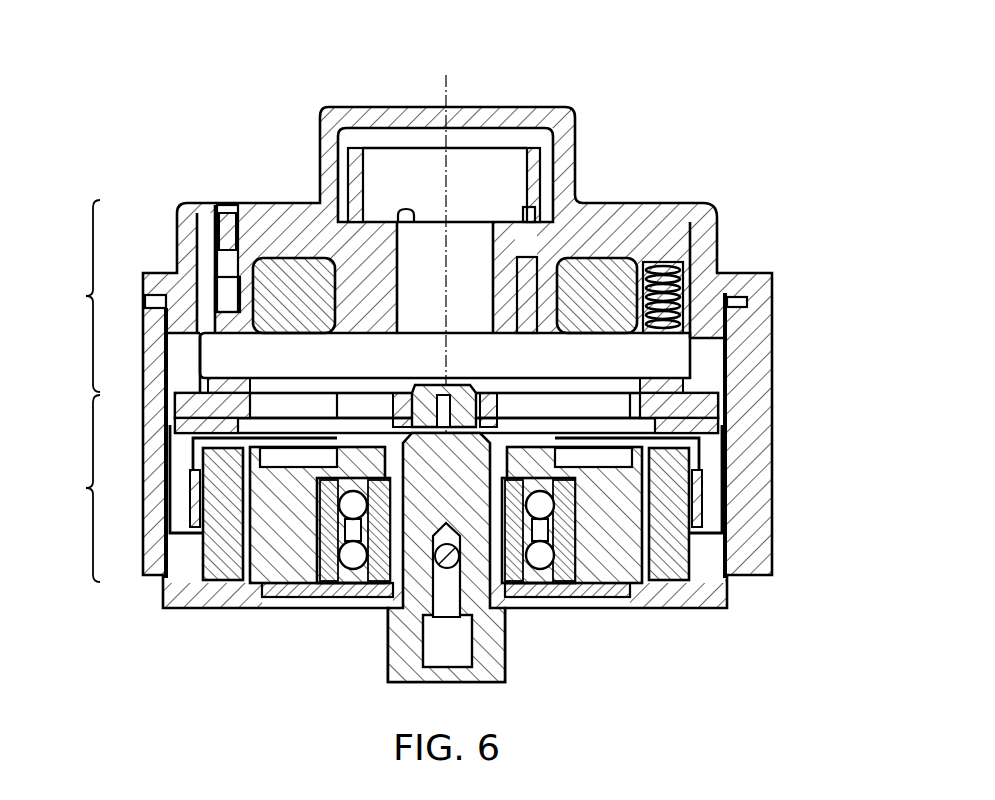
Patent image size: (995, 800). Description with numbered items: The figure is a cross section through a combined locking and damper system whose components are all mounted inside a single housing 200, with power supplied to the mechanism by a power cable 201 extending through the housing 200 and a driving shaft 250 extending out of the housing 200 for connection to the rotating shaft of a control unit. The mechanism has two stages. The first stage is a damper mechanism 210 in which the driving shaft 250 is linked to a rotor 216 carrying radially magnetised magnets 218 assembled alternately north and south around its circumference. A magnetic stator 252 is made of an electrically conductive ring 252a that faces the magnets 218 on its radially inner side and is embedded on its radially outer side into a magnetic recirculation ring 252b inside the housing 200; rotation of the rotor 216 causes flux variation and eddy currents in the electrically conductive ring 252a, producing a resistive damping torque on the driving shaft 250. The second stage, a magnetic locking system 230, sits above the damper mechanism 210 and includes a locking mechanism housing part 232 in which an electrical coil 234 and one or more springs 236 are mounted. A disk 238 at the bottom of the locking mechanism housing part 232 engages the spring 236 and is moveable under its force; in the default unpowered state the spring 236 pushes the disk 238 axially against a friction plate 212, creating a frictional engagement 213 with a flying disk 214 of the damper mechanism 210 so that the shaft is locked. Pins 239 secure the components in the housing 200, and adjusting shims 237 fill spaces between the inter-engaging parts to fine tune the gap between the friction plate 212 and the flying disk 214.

The housing 200 is at (533, 120).
The power cable 201 is at (409, 209).
The damper mechanism 210 is at (62, 488).
The friction plate 212 is at (687, 385).
The frictional engagement 213 is at (690, 420).
The flying disk 214 is at (700, 436).
The rotor 216 is at (713, 477).
The magnets 218 is at (728, 503).
The magnetic locking system 230 is at (62, 296).
The locking mechanism housing part 232 is at (638, 238).
The electrical coil 234 is at (293, 287).
The spring 236 is at (675, 270).
The adjusting shims 237 is at (748, 302).
The disk 238 is at (670, 357).
The pins 239 is at (207, 223).
The driving shaft 250 is at (453, 653).
The magnetic stator 252 is at (723, 608).
The electrically conductive ring 252a is at (727, 567).
The magnetic recirculation ring 252b is at (663, 555).